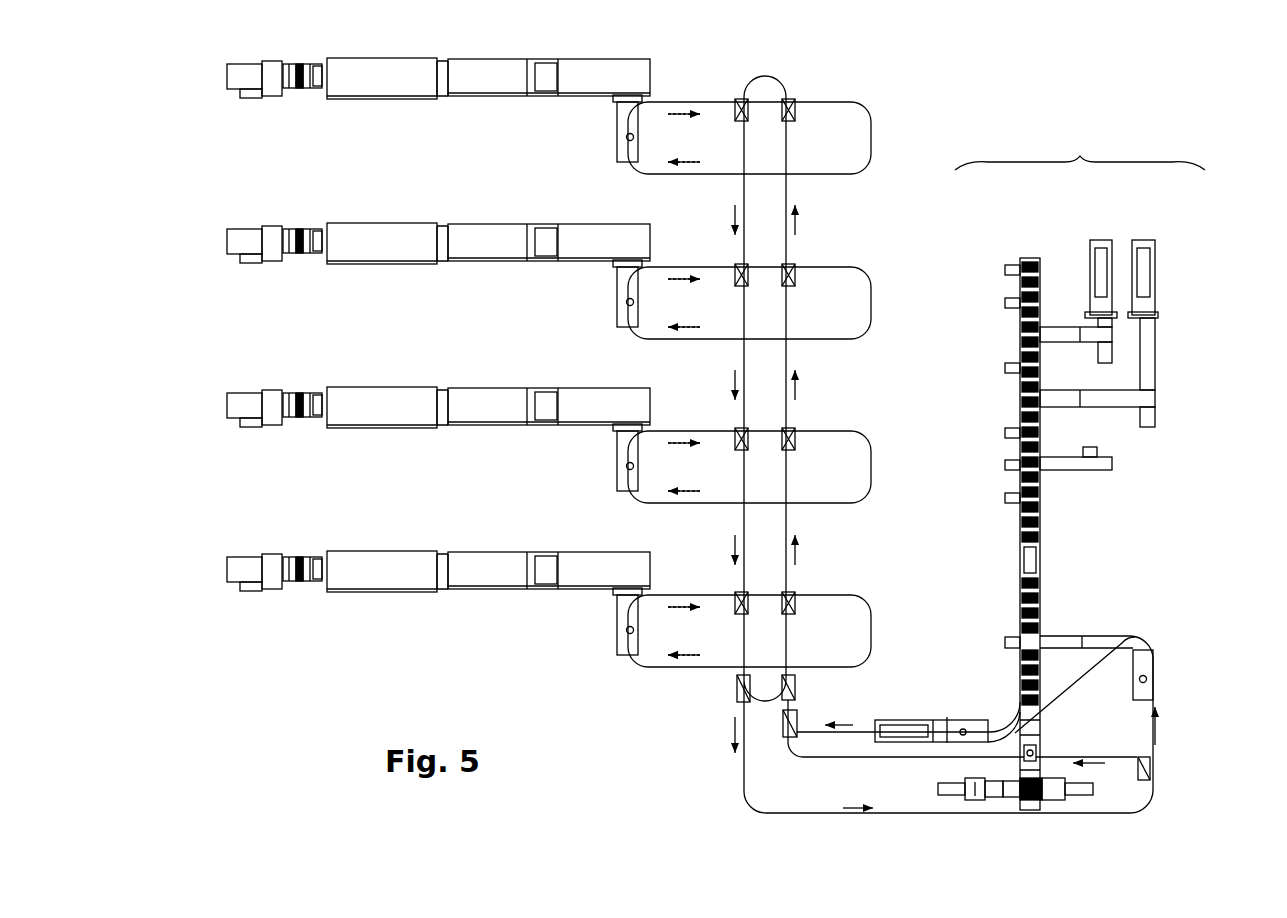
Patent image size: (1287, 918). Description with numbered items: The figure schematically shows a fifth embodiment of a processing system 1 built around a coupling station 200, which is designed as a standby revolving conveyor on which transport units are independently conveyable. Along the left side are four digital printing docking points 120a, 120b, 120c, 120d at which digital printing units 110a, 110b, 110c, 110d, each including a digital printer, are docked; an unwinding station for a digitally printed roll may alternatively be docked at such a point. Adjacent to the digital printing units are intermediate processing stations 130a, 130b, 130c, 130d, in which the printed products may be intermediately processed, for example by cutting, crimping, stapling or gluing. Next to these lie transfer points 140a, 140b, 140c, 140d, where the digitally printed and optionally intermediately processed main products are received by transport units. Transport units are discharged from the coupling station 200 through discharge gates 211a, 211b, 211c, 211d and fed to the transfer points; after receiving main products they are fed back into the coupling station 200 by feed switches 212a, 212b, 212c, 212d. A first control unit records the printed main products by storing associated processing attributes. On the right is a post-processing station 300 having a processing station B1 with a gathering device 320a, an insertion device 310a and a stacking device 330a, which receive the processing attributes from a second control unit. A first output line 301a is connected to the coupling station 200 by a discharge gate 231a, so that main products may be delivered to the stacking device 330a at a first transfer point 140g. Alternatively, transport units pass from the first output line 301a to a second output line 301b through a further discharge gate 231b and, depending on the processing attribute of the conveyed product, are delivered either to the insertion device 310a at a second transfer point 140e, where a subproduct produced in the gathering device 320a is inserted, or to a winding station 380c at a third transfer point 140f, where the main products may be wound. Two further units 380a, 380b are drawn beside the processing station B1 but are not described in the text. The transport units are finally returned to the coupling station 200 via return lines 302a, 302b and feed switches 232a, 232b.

The processing system 1 is at (1063, 92).
The coupling station 200 is at (790, 76).
The digital printing unit 110a is at (241, 595).
The digital printing unit 110b is at (239, 434).
The digital printing unit 110c is at (242, 271).
The digital printing unit 110d is at (252, 118).
The digital printing docking point 120a is at (380, 591).
The digital printing docking point 120b is at (375, 435).
The digital printing docking point 120c is at (382, 263).
The digital printing docking point 120d is at (390, 80).
The intermediate processing station 130a is at (549, 547).
The intermediate processing station 130b is at (549, 385).
The intermediate processing station 130c is at (541, 227).
The intermediate processing station 130d is at (588, 80).
The transfer point 140a is at (591, 621).
The transfer point 140b is at (598, 457).
The transfer point 140c is at (591, 293).
The transfer point 140d is at (622, 134).
The second transfer point 140e is at (1147, 674).
The third transfer point 140f is at (957, 743).
The first transfer point 140g is at (1033, 753).
The discharge gate 211a is at (826, 587).
The discharge gate 211b is at (826, 423).
The discharge gate 211c is at (826, 258).
The discharge gate 211d is at (793, 102).
The feed switch 212a is at (710, 590).
The feed switch 212b is at (710, 426).
The feed switch 212c is at (710, 261).
The feed switch 212d is at (738, 102).
The discharge gate 231a is at (740, 695).
The further discharge gate 231b is at (1152, 770).
The feed switch 232a is at (796, 683).
The feed switch 232b is at (796, 720).
The post-processing station 300 is at (1024, 253).
The first output line 301a is at (744, 782).
The second output line 301b is at (1088, 646).
The return line 302a is at (860, 757).
The return line 302b is at (848, 732).
The insertion device 310a is at (1026, 585).
The gathering device 320a is at (1000, 325).
The stacking device 330a is at (1068, 822).
The buffer unit 380a is at (1098, 240).
The buffer unit 380b is at (1152, 248).
The winding station 380c is at (920, 722).
The processing station B1 is at (1080, 152).